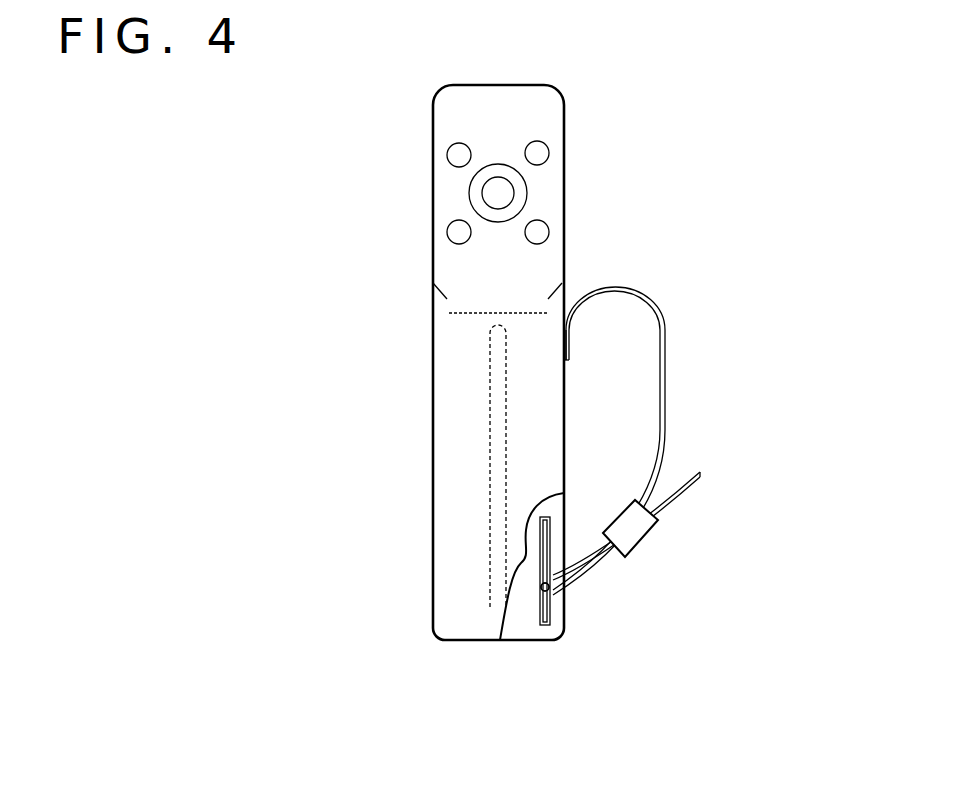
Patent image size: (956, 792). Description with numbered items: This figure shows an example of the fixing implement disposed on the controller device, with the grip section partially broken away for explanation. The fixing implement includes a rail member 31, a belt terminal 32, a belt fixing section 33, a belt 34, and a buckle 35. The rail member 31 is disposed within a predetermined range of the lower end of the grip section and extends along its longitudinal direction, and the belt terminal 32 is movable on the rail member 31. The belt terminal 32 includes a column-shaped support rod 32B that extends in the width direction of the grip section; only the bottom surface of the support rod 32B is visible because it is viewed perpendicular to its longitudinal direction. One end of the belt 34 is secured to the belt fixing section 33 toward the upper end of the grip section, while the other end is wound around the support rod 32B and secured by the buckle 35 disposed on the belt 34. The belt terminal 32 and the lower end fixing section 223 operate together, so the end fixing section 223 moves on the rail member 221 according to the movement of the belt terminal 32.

The rail member 221 is at (490, 440).
The end fixing section 223 is at (538, 587).
The rail member 31 is at (540, 641).
The belt terminal 32 is at (552, 603).
The support rod 32B is at (528, 600).
The belt fixing section 33 is at (567, 350).
The belt 34 is at (663, 410).
The buckle 35 is at (641, 530).